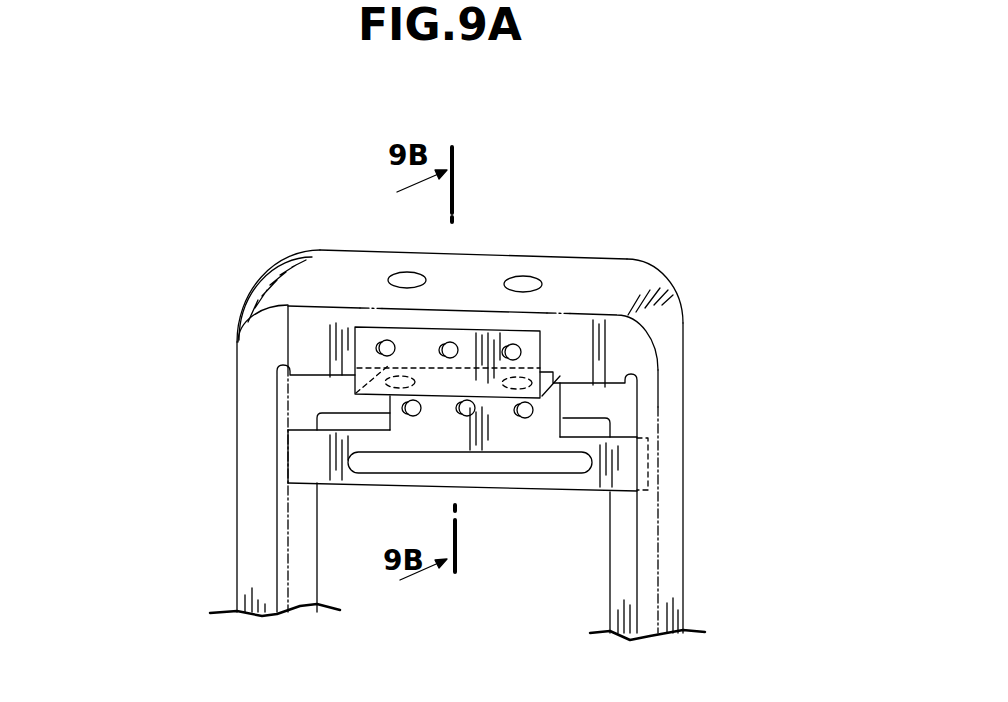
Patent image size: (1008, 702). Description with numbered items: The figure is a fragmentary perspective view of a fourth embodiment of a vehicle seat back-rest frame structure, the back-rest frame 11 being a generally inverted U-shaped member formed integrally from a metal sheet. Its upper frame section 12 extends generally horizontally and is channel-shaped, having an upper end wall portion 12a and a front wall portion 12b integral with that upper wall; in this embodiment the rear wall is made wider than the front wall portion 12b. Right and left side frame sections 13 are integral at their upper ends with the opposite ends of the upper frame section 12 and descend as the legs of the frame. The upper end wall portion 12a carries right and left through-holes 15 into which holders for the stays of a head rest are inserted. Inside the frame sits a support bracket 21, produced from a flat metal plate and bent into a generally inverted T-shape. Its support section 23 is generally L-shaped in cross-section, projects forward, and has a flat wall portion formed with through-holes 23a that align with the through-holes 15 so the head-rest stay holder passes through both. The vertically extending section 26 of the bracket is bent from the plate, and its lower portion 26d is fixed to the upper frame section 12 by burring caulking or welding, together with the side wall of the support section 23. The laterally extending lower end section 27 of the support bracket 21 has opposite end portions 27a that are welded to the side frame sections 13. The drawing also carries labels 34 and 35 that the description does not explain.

The back-rest frame 11 is at (226, 318).
The upper frame section 12 is at (327, 275).
The upper end wall portion 12a is at (587, 273).
The front wall portion 12b is at (300, 330).
The side frame section 13 is at (250, 530).
The through-hole 15 is at (420, 273).
The support bracket 21 is at (508, 491).
The support section 23 is at (557, 370).
The through-hole 23a is at (402, 375).
The vertically extending section 26 is at (548, 408).
The lower portion of vertically extending section 26d is at (538, 428).
The laterally extending lower end section 27 is at (533, 473).
The opposite end portion 27a is at (300, 460).
The top surface 34 is at (464, 280).
The fixing holes 35 is at (467, 416).